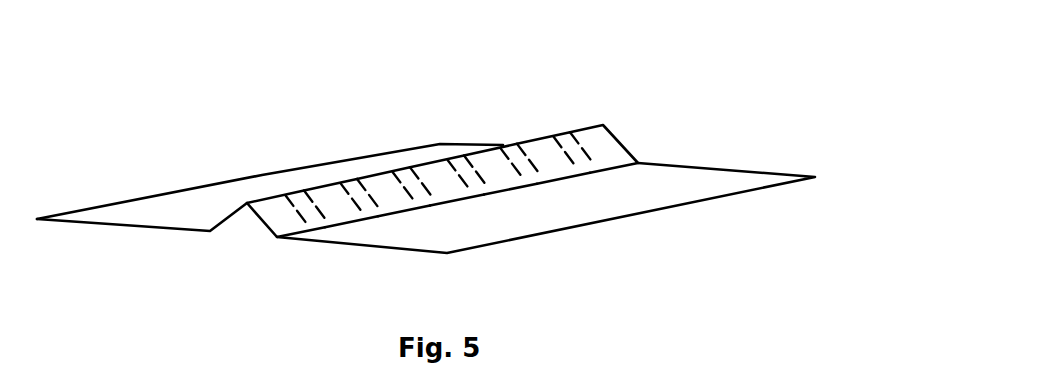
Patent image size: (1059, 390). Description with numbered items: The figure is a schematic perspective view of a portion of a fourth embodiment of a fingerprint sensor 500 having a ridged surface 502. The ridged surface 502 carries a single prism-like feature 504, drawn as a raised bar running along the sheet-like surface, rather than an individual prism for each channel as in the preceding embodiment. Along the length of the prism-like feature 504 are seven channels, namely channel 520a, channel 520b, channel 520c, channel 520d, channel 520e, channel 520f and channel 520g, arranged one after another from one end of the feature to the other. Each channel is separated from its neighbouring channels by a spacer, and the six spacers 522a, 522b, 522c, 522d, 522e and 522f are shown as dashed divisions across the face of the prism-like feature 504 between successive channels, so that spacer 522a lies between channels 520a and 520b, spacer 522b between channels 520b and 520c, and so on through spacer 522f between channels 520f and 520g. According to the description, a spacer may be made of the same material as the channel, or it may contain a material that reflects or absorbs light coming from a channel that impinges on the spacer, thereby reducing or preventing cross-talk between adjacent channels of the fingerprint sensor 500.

The fingerprint sensor 500 is at (713, 90).
The ridged surface 502 is at (663, 210).
The prism-like feature 504 is at (228, 220).
The channel 520a is at (267, 178).
The channel 520b is at (323, 188).
The channel 520c is at (380, 174).
The channel 520d is at (433, 163).
The channel 520e is at (487, 150).
The channel 520f is at (528, 142).
The channel 520g is at (595, 127).
The spacer 522a is at (323, 232).
The spacer 522b is at (378, 217).
The spacer 522c is at (432, 210).
The spacer 522d is at (483, 193).
The spacer 522e is at (537, 183).
The spacer 522f is at (590, 172).